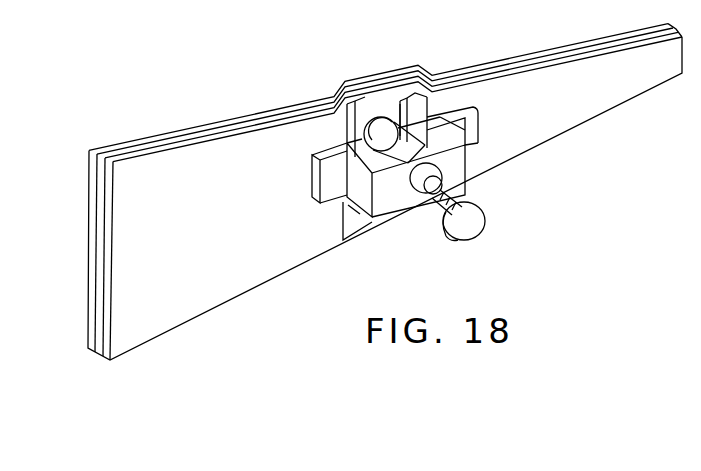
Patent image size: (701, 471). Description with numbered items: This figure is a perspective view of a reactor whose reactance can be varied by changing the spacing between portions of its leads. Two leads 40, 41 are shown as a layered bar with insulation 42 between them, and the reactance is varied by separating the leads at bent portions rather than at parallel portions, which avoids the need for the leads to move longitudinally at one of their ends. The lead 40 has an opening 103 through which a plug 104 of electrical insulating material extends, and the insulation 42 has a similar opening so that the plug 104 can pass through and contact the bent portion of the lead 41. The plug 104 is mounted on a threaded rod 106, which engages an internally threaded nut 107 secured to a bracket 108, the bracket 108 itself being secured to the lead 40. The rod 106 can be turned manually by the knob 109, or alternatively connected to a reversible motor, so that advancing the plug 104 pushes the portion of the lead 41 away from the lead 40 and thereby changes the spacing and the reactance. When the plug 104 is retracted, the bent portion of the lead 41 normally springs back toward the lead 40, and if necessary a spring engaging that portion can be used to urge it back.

The lead 40 is at (235, 285).
The lead 41 is at (218, 127).
The insulation 42 is at (155, 147).
The opening 103 is at (397, 118).
The plug 104 is at (380, 130).
The threaded rod 106 is at (433, 200).
The internally threaded nut 107 is at (443, 163).
The bracket 108 is at (388, 202).
The knob 109 is at (477, 227).